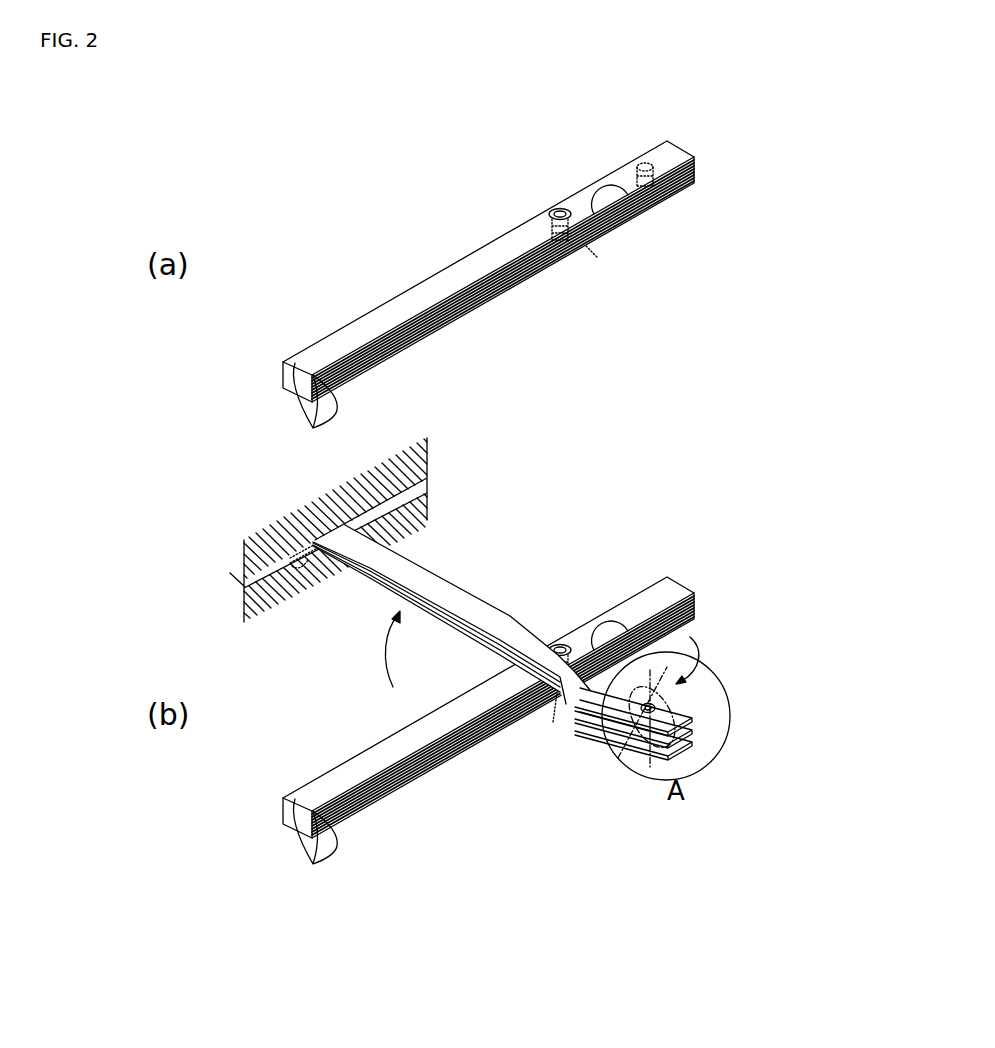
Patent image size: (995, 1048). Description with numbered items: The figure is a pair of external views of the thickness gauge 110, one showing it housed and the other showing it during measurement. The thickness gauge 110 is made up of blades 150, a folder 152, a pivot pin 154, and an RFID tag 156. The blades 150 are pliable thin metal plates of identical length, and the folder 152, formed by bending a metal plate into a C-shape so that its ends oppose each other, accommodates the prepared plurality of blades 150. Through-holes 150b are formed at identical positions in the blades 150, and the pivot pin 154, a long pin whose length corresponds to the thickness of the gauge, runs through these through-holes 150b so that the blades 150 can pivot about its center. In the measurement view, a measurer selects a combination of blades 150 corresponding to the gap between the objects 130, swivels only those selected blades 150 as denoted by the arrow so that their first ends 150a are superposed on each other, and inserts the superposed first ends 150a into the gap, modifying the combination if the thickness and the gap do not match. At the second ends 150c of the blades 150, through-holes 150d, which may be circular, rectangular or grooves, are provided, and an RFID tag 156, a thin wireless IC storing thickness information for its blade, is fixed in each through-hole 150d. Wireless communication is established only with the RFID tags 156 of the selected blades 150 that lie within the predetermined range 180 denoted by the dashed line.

The thickness gauge 110 is at (436, 189).
The objects 130 is at (423, 494).
The blades 150 is at (488, 288).
The first ends 150a is at (290, 530).
The through-holes 150b is at (595, 499).
The second ends 150c is at (685, 708).
The through-holes 150d is at (655, 184).
The folder 152 is at (314, 428).
The pivot pin 154 is at (559, 208).
The RFID tag 156 is at (655, 707).
The predetermined range 180 is at (633, 753).